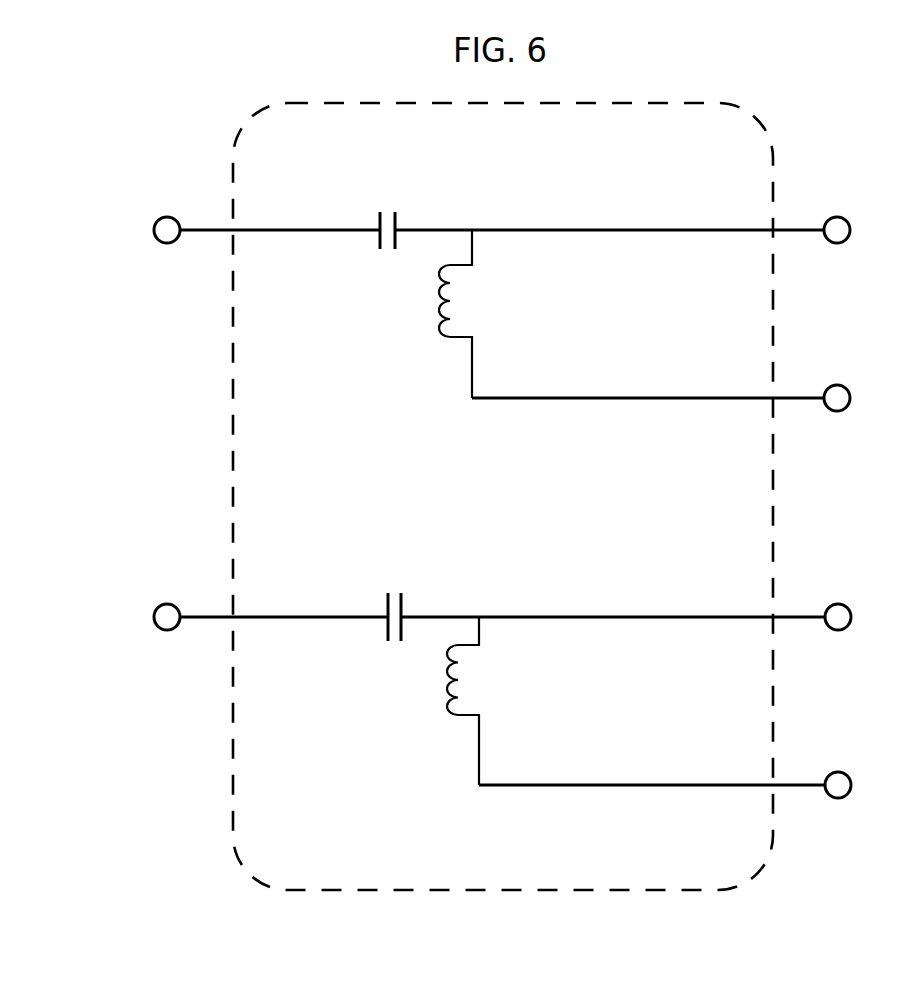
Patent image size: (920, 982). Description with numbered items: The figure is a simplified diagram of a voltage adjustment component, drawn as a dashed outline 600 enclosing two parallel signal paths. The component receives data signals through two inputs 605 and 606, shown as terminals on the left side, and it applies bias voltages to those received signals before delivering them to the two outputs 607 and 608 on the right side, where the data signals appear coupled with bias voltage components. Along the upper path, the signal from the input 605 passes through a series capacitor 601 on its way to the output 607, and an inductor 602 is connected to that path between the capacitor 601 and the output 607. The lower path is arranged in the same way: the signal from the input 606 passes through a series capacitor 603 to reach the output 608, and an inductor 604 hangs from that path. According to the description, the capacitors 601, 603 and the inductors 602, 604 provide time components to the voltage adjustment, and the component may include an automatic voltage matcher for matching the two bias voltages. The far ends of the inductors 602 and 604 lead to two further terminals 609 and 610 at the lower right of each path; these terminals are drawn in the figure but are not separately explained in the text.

The duplexer / filter circuit 600 is at (818, 97).
The capacitor 601 is at (385, 205).
The inductor 602 is at (498, 282).
The capacitor 603 is at (398, 568).
The inductor 604 is at (513, 682).
The input 605 is at (165, 203).
The input 606 is at (167, 597).
The output 607 is at (843, 212).
The output 608 is at (838, 600).
The first ground terminal 609 is at (843, 380).
The second ground terminal 610 is at (847, 765).